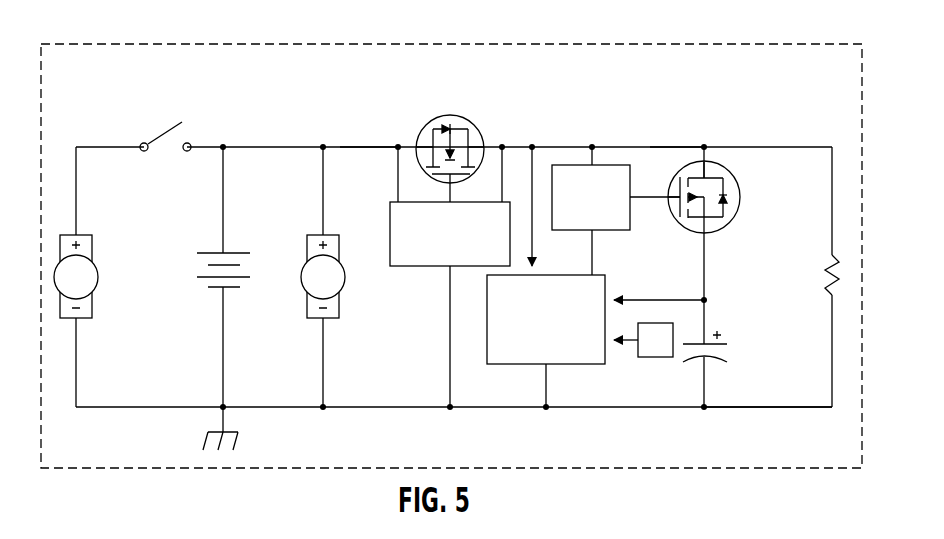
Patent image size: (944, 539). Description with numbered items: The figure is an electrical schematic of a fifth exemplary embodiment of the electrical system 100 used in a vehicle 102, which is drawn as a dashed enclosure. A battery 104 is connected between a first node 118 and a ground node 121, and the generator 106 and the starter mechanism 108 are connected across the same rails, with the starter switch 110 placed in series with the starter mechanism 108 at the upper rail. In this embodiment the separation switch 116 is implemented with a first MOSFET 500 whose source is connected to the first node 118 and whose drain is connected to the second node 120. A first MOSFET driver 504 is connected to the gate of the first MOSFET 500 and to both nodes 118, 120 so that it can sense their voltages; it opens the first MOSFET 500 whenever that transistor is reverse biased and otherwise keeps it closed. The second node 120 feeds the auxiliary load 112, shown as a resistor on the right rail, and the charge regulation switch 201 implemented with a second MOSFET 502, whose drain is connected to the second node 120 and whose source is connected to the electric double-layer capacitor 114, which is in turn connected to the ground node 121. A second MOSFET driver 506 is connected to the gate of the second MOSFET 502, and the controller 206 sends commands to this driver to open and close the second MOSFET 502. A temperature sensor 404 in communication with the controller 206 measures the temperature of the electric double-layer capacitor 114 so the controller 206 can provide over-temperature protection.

The electrical system 100 is at (749, 92).
The vehicle 102 is at (100, 44).
The battery 104 is at (236, 252).
The generator 106 is at (305, 294).
The starter mechanism 108 is at (98, 276).
The starter switch 110 is at (165, 129).
The auxiliary load 112 is at (822, 282).
The electric double-layer capacitor 114 is at (726, 344).
The separation switch 116 is at (405, 121).
The first node 118 is at (368, 146).
The second node 120 is at (668, 146).
The ground node 121 is at (746, 408).
The charge regulation switch 201 is at (738, 223).
The controller 206 is at (527, 366).
The temperature sensor 404 is at (652, 358).
The first MOSFET 500 is at (455, 116).
The second MOSFET 502 is at (741, 196).
The first MOSFET driver 504 is at (440, 268).
The second MOSFET driver 506 is at (605, 164).